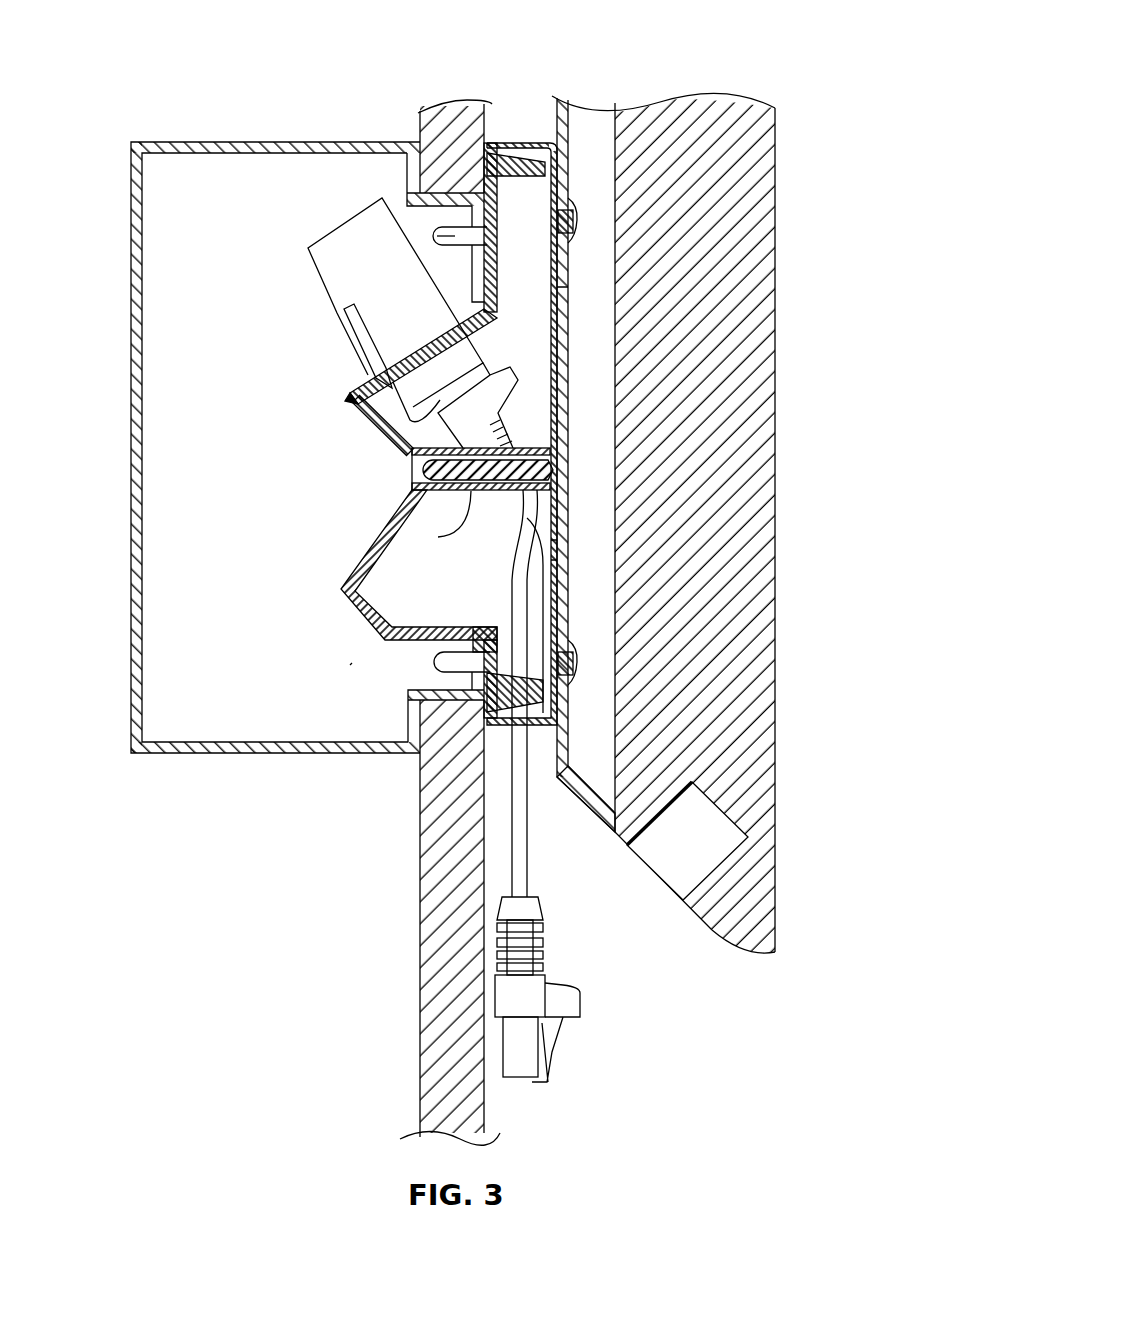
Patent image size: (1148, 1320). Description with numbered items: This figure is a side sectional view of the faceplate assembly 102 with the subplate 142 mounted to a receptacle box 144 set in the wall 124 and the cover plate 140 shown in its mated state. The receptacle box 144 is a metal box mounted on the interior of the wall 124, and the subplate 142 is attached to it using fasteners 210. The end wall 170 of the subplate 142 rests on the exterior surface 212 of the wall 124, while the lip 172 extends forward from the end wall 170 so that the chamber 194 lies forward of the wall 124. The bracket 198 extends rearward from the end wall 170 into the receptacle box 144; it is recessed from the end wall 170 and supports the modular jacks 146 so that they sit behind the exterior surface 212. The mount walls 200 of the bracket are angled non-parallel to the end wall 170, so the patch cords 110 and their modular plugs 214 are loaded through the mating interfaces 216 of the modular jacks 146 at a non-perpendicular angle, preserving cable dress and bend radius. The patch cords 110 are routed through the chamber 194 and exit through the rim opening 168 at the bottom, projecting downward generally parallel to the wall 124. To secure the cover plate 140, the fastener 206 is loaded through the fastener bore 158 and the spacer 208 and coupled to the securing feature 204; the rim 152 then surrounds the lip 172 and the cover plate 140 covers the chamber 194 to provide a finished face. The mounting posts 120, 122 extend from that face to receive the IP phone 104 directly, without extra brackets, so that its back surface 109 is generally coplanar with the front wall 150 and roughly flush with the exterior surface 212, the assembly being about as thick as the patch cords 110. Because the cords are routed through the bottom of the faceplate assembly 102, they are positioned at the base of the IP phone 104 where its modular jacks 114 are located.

The faceplate assembly 102 is at (345, 667).
The IP phone 104 is at (715, 913).
The back surface 109 is at (557, 767).
The patch cords 110 is at (522, 833).
The modular jacks 114 is at (675, 873).
The mounting post 120 is at (576, 222).
The mounting post 122 is at (578, 652).
The wall 124 is at (425, 842).
The cover plate 140 is at (556, 410).
The subplate 142 is at (522, 147).
The receptacle box 144 is at (205, 141).
The modular jacks 146 is at (350, 283).
The front wall 150 is at (557, 548).
The rim 152 is at (502, 147).
The fastener bore 158 is at (553, 364).
The rim opening 168 is at (500, 725).
The end wall 170 is at (475, 275).
The lip 172 is at (538, 160).
The chamber 194 is at (548, 341).
The bracket 198 is at (356, 402).
The mount walls 200 is at (372, 373).
The securing feature 204 is at (403, 504).
The fastener 206 is at (433, 467).
The spacer 208 is at (438, 537).
The fasteners 210 is at (455, 237).
The exterior surface 212 is at (482, 885).
The modular plugs 214 is at (407, 447).
The mating interfaces 216 is at (392, 433).